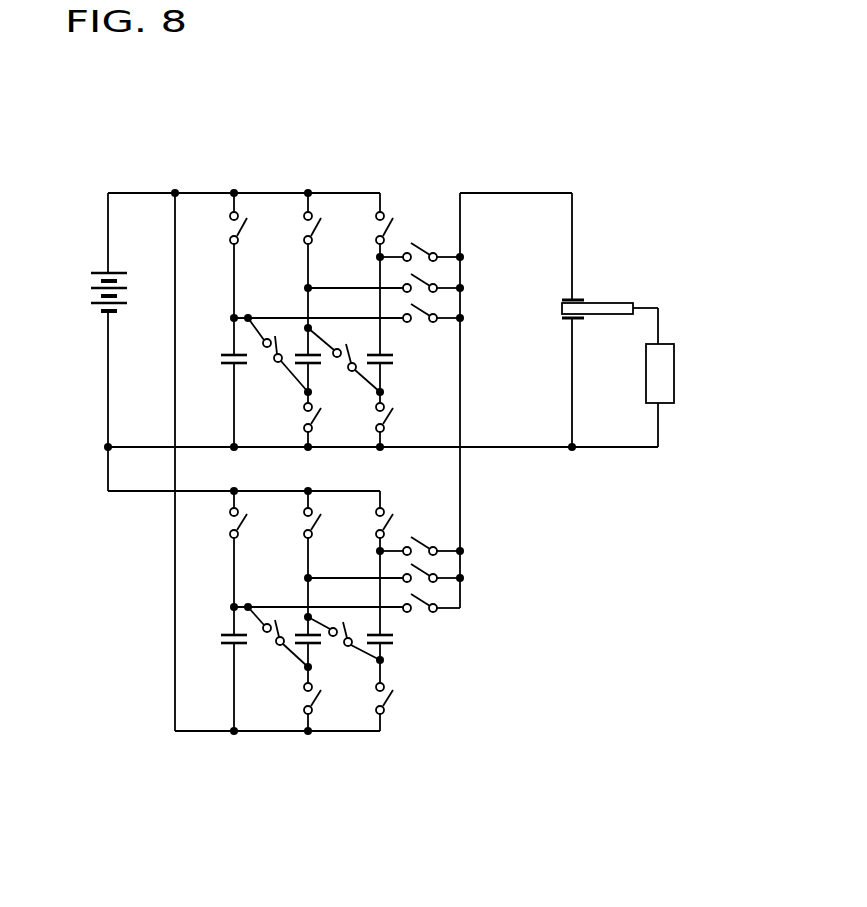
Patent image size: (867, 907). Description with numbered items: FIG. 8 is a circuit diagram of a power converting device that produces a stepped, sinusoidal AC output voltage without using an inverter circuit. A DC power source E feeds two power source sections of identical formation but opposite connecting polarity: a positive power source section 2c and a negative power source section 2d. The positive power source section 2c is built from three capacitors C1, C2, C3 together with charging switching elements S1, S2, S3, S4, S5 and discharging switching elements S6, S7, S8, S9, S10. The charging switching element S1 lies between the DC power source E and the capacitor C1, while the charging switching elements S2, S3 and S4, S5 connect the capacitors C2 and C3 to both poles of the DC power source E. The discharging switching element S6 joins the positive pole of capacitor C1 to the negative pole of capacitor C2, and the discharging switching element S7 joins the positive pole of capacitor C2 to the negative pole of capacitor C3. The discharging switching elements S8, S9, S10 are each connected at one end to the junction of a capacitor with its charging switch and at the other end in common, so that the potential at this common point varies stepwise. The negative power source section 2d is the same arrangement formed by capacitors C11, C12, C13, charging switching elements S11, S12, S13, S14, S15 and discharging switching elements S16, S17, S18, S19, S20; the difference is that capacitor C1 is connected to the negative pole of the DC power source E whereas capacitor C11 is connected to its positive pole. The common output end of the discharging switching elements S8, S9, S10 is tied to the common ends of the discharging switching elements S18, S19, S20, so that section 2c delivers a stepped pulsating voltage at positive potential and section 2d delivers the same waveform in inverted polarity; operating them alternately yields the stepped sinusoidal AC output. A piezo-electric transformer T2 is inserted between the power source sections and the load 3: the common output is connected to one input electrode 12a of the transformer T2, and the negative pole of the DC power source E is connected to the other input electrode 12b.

The DC power source E is at (99, 320).
The positive power source section 2c is at (328, 273).
The negative power source section 2d is at (365, 653).
The charging switching element S1 is at (219, 229).
The charging switching element S2 is at (292, 229).
The charging switching element S3 is at (289, 424).
The charging switching element S4 is at (365, 229).
The charging switching element S5 is at (363, 424).
The discharging switching element S6 is at (277, 361).
The discharging switching element S7 is at (344, 367).
The discharging switching element S8 is at (425, 235).
The discharging switching element S9 is at (423, 279).
The discharging switching element S10 is at (423, 310).
The charging switching element S11 is at (215, 521).
The charging switching element S12 is at (287, 521).
The charging switching element S13 is at (334, 709).
The charging switching element S14 is at (360, 521).
The charging switching element S15 is at (410, 709).
The discharging switching element S16 is at (276, 646).
The discharging switching element S17 is at (344, 650).
The discharging switching element S18 is at (429, 528).
The discharging switching element S19 is at (420, 571).
The discharging switching element S20 is at (420, 602).
The capacitor C1 is at (217, 377).
The capacitor C2 is at (300, 349).
The capacitor C3 is at (402, 371).
The capacitor C11 is at (217, 625).
The capacitor C12 is at (296, 633).
The capacitor C13 is at (408, 642).
The piezo-electric transformer T2 is at (627, 307).
The input electrode 12a is at (576, 300).
The input electrode 12b is at (575, 319).
The load 3 is at (670, 373).